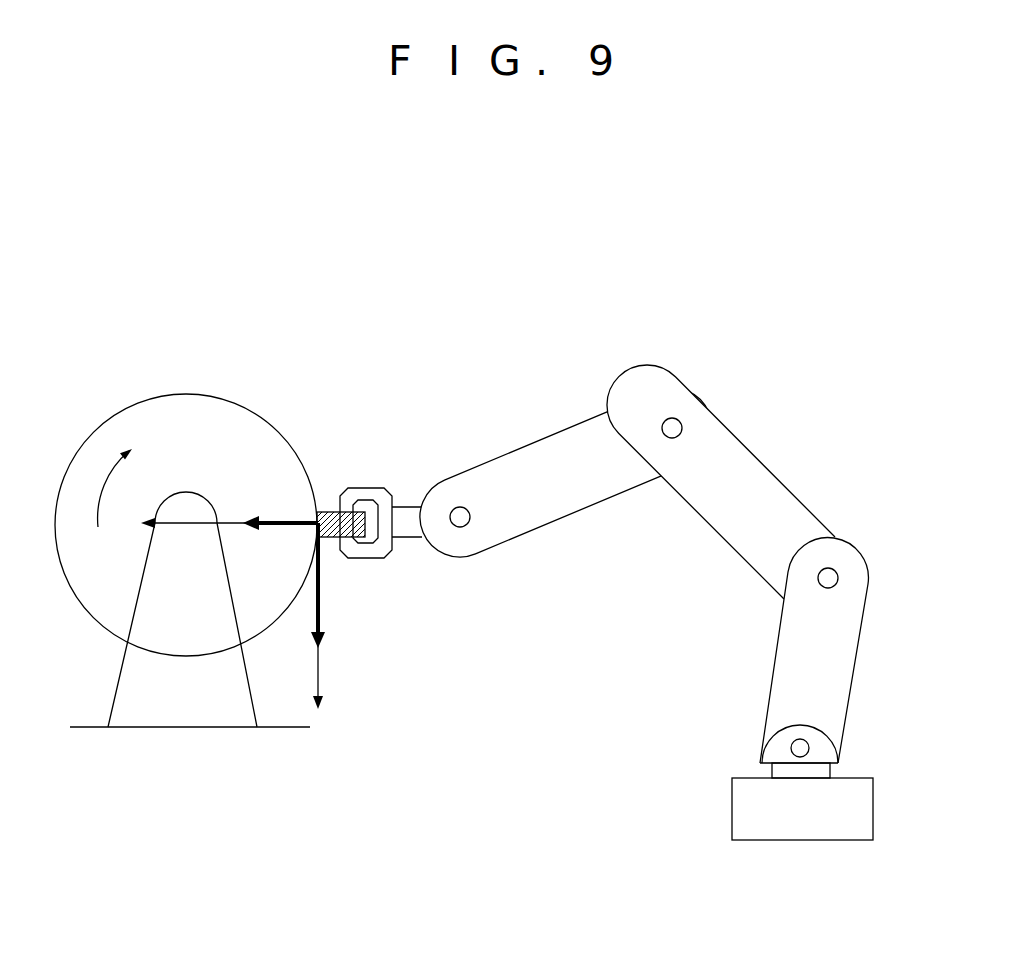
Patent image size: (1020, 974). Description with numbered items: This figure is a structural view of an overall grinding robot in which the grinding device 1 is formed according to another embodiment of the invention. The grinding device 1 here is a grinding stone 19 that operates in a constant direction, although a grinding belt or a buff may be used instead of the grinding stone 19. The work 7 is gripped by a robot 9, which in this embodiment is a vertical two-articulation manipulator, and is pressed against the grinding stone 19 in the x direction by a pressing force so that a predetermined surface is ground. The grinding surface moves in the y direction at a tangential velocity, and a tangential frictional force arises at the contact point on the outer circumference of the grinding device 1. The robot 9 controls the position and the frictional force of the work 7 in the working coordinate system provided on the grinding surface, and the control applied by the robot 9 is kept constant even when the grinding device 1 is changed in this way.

The grinding device 1 is at (232, 341).
The work 7 is at (325, 507).
The robot 9 is at (557, 435).
The grinding stone 19 is at (125, 408).